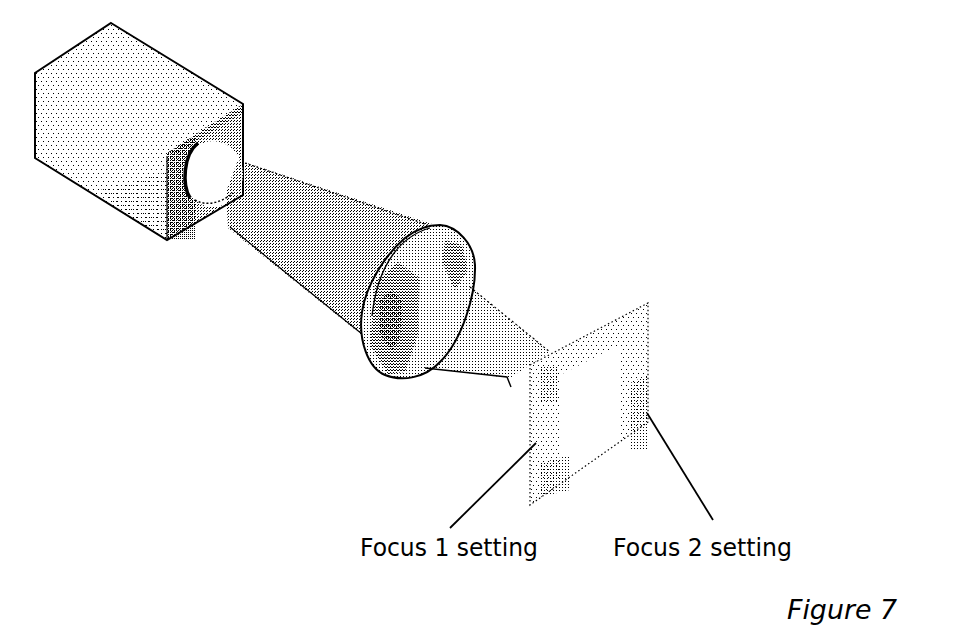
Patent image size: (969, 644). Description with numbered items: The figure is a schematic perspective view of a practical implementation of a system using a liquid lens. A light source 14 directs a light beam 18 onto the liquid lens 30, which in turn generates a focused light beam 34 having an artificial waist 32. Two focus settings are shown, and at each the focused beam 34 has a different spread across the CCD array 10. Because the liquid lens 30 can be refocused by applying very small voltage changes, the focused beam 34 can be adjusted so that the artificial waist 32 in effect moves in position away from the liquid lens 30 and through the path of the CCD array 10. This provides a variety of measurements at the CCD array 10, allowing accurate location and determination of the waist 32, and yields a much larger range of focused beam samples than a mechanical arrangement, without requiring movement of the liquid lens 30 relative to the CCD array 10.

The CCD array 10 is at (637, 317).
The light source 14 is at (112, 212).
The light beam 18 is at (285, 272).
The liquid lens 30 is at (430, 224).
The artificial waist 32 is at (508, 385).
The focused light beam 34 is at (497, 312).